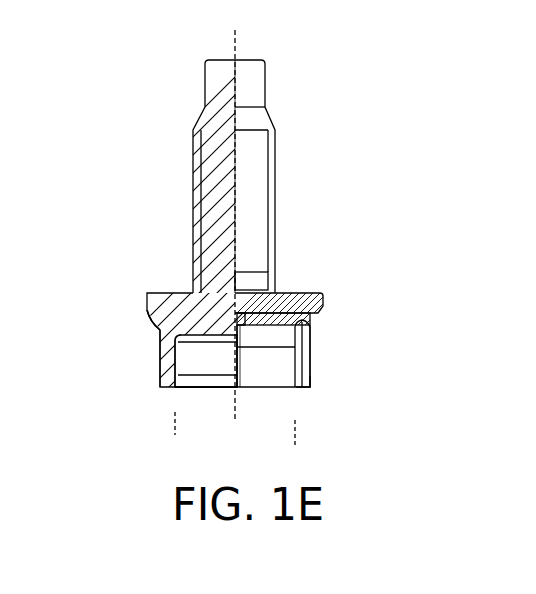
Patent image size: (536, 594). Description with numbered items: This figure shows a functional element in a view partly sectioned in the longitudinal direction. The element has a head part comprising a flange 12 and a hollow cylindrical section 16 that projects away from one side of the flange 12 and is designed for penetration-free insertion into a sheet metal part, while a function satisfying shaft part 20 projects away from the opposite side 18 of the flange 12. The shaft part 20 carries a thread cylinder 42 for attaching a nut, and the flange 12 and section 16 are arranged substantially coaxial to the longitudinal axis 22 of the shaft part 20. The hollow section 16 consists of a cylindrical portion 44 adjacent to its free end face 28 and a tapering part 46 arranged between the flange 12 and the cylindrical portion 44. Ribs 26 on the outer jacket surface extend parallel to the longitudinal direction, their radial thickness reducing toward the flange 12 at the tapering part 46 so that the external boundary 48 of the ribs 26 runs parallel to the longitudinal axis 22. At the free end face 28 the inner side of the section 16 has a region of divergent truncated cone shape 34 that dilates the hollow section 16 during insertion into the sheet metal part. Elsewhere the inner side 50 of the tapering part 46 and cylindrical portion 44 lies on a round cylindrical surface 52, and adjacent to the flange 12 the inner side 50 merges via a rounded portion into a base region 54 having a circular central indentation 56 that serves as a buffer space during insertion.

The flange 12 is at (323, 298).
The section 16 is at (160, 360).
The side 18 is at (166, 283).
The shaft part 20 is at (273, 152).
The longitudinal axis 22 is at (235, 405).
The ribs 26 is at (310, 367).
The free end face 28 is at (310, 388).
The divergent truncated cone shape 34 is at (187, 388).
The thread cylinder 42 is at (275, 178).
The cylindrical portion 44 is at (172, 373).
The tapering part 46 is at (158, 328).
The external boundary 48 is at (308, 353).
The inner side 50 is at (178, 358).
The round cylindrical surface 52 is at (186, 448).
The base region 54 is at (193, 288).
The central indentation 56 is at (232, 316).